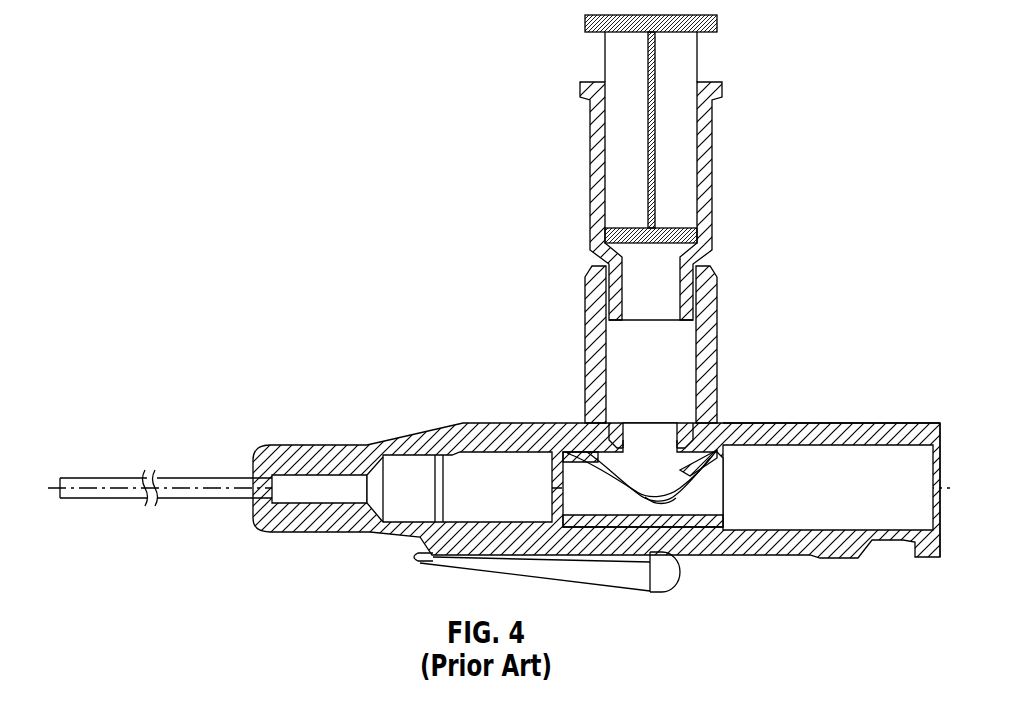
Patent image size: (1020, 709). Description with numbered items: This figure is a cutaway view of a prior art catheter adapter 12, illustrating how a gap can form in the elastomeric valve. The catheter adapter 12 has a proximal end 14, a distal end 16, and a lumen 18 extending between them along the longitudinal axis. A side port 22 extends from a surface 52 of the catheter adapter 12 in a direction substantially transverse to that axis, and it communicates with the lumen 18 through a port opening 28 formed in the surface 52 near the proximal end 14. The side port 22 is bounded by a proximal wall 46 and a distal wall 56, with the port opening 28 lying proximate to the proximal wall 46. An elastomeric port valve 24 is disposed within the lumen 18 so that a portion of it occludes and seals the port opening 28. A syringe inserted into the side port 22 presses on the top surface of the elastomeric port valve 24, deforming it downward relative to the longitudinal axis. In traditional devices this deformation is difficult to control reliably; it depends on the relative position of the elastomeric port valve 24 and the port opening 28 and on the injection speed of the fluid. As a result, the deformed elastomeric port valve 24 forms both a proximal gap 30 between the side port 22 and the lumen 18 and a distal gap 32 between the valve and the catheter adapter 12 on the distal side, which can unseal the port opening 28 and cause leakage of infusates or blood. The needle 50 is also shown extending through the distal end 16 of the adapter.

The catheter adapter 12 is at (850, 352).
The proximal end 14 is at (932, 428).
The distal end 16 is at (258, 448).
The lumen 18 is at (845, 470).
The side port 22 is at (662, 219).
The elastomeric port valve 24 is at (580, 448).
The port opening 28 is at (668, 445).
The proximal gap 30 is at (672, 477).
The distal gap 32 is at (612, 446).
The proximal wall 46 is at (705, 345).
The needle 50 is at (190, 480).
The surface 52 is at (783, 425).
The distal wall 56 is at (609, 307).